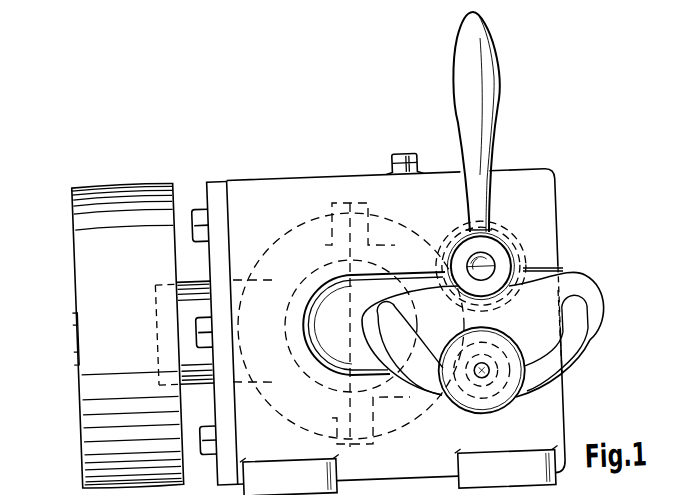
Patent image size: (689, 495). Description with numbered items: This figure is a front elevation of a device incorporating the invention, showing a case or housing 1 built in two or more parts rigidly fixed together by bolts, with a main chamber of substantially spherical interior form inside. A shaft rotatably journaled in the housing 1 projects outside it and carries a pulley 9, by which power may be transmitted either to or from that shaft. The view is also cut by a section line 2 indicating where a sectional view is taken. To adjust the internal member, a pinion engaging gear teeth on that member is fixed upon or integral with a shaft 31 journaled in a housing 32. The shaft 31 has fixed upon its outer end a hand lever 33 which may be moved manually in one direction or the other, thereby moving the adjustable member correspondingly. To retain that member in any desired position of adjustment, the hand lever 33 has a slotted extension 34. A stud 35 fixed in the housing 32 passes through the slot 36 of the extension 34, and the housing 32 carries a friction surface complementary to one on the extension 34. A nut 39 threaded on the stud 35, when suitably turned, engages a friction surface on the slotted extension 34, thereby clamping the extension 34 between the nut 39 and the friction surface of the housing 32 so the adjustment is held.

The case or housing 1 is at (320, 252).
The section line 2- 2 is at (620, 330).
The pulley 9 is at (83, 193).
The shaft 31 is at (497, 255).
The housing 32 is at (557, 194).
The hand lever 33 is at (508, 94).
The slotted extension 34 is at (594, 296).
The stud 35 is at (485, 381).
The slot 36 is at (577, 338).
The nut 39 is at (514, 398).